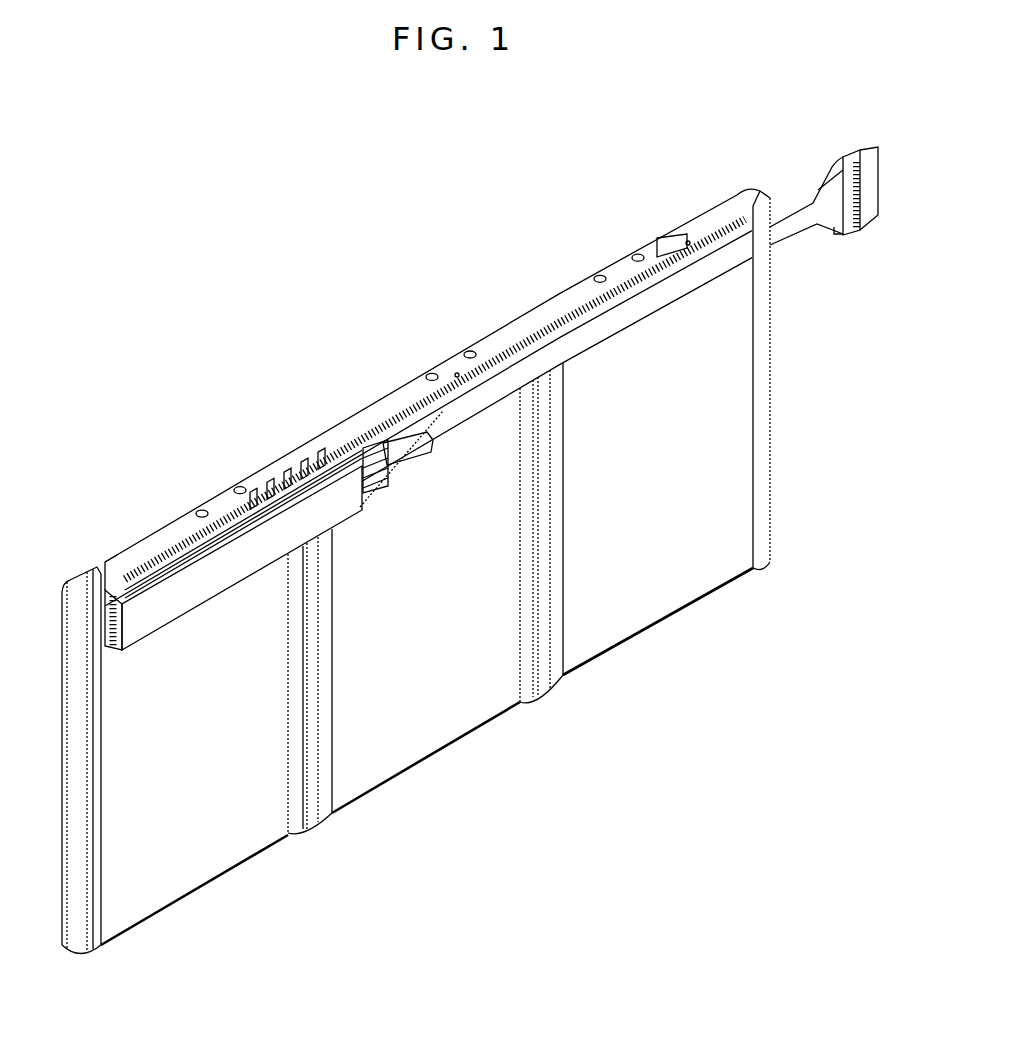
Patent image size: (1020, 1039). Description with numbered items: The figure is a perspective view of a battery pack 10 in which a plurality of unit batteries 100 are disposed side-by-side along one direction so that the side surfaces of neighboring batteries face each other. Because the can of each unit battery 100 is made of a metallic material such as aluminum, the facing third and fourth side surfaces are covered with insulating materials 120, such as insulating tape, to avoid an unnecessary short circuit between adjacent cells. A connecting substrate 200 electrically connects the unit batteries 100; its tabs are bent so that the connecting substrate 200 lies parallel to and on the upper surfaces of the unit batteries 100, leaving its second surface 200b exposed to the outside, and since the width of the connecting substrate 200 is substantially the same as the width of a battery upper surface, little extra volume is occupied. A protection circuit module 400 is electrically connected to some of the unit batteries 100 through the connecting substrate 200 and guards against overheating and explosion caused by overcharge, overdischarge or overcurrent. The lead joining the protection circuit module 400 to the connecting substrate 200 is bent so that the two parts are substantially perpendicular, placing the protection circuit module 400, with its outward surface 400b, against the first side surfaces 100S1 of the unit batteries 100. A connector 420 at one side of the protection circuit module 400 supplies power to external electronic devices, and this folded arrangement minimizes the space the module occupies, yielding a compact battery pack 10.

The battery pack 10 is at (774, 143).
The unit battery 100 is at (702, 616).
The first side surface 100S1 is at (633, 620).
The insulating material 120 is at (762, 570).
The connecting substrate 200 is at (437, 392).
The second surface 200b is at (528, 325).
The protection circuit module 400 is at (252, 530).
The connection portion of bus bar 400b is at (340, 515).
The connector 420 is at (838, 228).